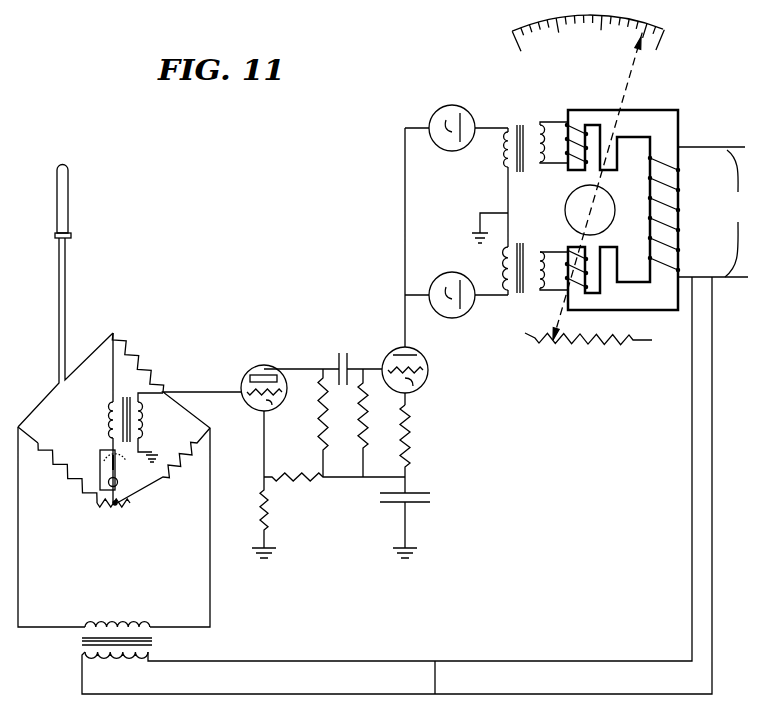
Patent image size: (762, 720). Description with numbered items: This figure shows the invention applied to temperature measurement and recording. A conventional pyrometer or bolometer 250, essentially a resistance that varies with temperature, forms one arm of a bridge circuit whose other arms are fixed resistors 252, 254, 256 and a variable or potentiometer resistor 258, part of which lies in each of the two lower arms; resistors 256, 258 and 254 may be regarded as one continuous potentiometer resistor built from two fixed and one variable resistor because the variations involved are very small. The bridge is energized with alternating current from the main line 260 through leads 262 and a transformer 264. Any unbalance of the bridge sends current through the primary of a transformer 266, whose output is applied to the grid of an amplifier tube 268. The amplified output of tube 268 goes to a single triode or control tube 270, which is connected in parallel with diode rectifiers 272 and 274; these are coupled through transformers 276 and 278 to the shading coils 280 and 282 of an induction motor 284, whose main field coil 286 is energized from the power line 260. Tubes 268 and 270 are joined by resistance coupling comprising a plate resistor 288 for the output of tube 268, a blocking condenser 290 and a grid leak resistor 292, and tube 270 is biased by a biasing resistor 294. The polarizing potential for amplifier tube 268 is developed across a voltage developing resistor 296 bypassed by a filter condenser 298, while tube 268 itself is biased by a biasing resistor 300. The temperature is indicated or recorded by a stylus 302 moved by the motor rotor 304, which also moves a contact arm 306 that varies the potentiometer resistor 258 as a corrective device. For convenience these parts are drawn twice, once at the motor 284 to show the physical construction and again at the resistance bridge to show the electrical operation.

The bolometer 250 is at (70, 197).
The fixed resistor 252 is at (133, 357).
The fixed resistor 254 is at (200, 452).
The fixed resistor 256 is at (50, 467).
The potentiometer resistor 258 is at (107, 508).
The main line 260 is at (736, 213).
The leads 262 is at (433, 661).
The transformer 264 is at (157, 644).
The transformer 266 is at (128, 398).
The amplifier tube 268 is at (250, 367).
The control tube 270 is at (418, 383).
The diode rectifier 272 is at (448, 108).
The diode rectifier 274 is at (448, 277).
The transformer 276 is at (515, 122).
The transformer 278 is at (517, 292).
The shading coil 280 is at (570, 128).
The shading coil 282 is at (575, 250).
The induction motor 284 is at (633, 143).
The main field coil 286 is at (673, 147).
The plate resistor 288 is at (322, 403).
The blocking condenser 290 is at (345, 353).
The grid leak resistor 292 is at (363, 443).
The biasing resistor 294 is at (413, 427).
The voltage developing resistor 296 is at (292, 485).
The filter condenser 298 is at (420, 495).
The biasing resistor 300 is at (255, 508).
The stylus 302 is at (113, 467).
The motor rotor 304 is at (118, 483).
The contact arm 306 is at (120, 503).